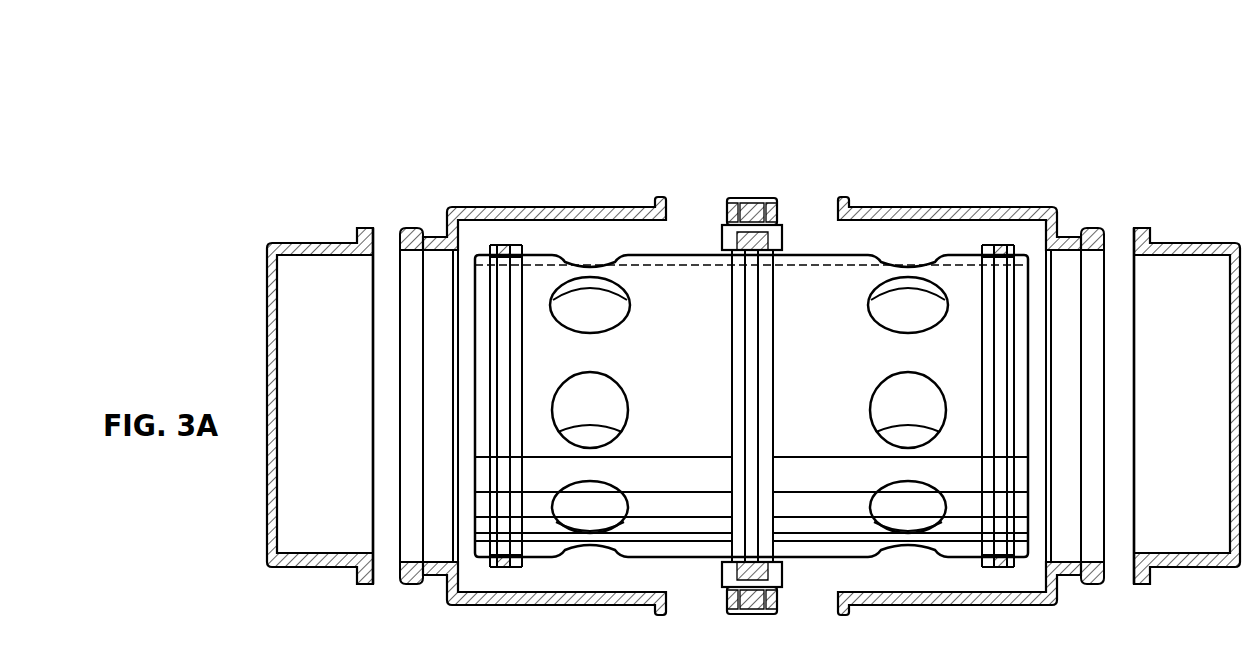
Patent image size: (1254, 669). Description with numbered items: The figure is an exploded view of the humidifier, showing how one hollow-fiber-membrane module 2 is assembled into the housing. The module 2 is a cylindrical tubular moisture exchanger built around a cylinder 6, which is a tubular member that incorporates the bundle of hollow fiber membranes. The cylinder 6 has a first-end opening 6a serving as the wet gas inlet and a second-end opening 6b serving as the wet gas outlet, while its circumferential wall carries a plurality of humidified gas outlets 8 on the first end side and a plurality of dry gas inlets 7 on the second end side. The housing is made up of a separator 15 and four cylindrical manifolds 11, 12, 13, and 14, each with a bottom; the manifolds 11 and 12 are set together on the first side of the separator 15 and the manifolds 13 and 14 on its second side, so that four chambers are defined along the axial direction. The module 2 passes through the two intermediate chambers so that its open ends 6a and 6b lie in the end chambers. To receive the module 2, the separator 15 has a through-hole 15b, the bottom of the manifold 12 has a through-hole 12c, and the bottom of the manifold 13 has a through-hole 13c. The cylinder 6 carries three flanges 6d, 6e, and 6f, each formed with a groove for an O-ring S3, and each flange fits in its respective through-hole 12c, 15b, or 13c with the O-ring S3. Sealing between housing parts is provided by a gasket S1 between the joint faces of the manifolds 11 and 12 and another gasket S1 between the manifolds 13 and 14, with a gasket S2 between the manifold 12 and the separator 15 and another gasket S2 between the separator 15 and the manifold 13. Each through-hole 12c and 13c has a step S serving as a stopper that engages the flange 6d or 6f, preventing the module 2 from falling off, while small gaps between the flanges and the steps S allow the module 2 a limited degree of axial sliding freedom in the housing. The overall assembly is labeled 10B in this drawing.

The hollow-fiber-membrane module 2 is at (808, 567).
The cylinder 6 is at (751, 462).
The first-end opening 6a is at (466, 548).
The second-end opening 6b is at (1038, 535).
The flange 6d is at (531, 545).
The flange 6e is at (736, 542).
The flange 6f is at (970, 548).
The dry gas inlet 7 is at (923, 527).
The humidified gas outlet 8 is at (575, 527).
The drive unit 10B is at (874, 105).
The manifold 11 is at (311, 238).
The manifold 12 is at (490, 371).
The through-hole 12c is at (442, 262).
The manifold 13 is at (1019, 372).
The through-hole 13c is at (1057, 262).
The manifold 14 is at (1212, 240).
The separator 15 is at (752, 366).
The through-hole 15b is at (738, 262).
The step S is at (425, 553).
The gasket S1 is at (405, 228).
The gasket S2 is at (737, 198).
The O-ring S3 is at (504, 243).